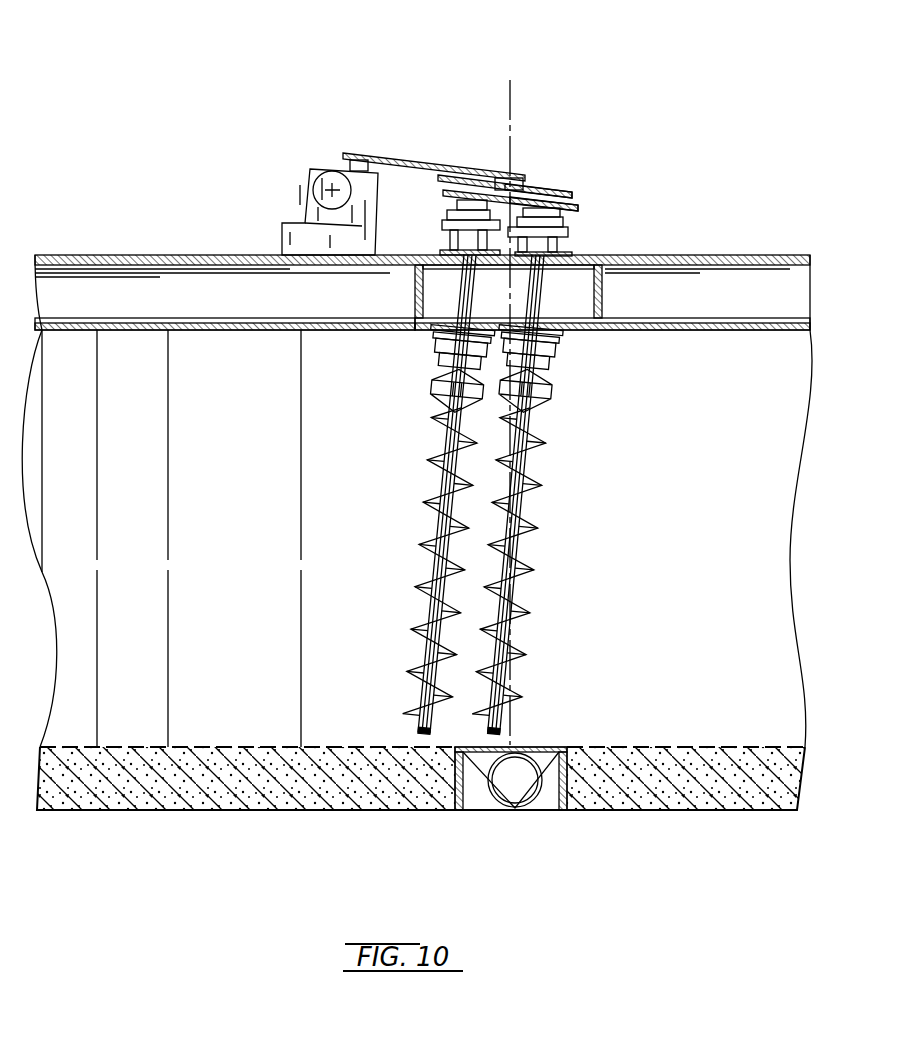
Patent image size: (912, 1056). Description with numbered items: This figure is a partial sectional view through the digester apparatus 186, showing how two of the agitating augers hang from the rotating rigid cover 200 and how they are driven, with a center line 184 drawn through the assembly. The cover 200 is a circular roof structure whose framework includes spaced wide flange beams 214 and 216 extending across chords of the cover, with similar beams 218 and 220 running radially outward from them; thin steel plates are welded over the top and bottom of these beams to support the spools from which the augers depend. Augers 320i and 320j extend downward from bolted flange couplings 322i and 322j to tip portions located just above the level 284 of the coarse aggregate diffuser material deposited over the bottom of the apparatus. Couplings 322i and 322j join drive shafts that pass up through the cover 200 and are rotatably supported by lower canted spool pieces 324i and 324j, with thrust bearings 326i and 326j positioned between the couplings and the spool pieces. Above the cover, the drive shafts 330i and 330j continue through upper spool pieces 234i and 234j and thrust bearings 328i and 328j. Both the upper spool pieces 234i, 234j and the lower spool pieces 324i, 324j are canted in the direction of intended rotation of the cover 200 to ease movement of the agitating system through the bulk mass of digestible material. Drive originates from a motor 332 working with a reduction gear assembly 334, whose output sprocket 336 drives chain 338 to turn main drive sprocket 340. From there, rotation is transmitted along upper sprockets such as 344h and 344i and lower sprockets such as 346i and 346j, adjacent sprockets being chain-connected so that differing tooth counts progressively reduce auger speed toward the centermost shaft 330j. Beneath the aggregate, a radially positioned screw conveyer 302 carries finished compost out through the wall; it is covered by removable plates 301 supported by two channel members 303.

The digester apparatus 186 is at (156, 70).
The center line 184 is at (512, 98).
The rigid cover 200 is at (160, 254).
The wide flange beam 214 is at (413, 293).
The wide flange beam 216 is at (604, 300).
The beam 218 is at (233, 305).
The beam 220 is at (693, 305).
The spool piece 234i is at (440, 252).
The spool piece 234j is at (572, 254).
The level of diffuser material 284 is at (243, 747).
The removable plates 301 is at (540, 748).
The screw conveyer 302 is at (502, 812).
The channel members 303 is at (466, 808).
The auger 320i is at (440, 522).
The auger 320j is at (532, 514).
The bolted flange coupling 322i is at (435, 386).
The bolted flange coupling 322j is at (560, 397).
The lower canted spool piece 324i is at (440, 343).
The lower canted spool piece 324j is at (548, 344).
The thrust bearing 326i is at (438, 361).
The thrust bearing 326j is at (554, 361).
The thrust bearing 328i is at (450, 240).
The thrust bearing 328j is at (558, 243).
The drive shaft 330i is at (450, 222).
The drive shaft 330j is at (568, 230).
The motor 332 is at (330, 191).
The reduction gear assembly 334 is at (312, 172).
The sprocket 336 is at (356, 154).
The chain 338 is at (430, 160).
The main drive sprocket 340 is at (497, 175).
The sprocket 344i is at (445, 180).
The sprocket 344h is at (566, 190).
The sprocket 346i is at (452, 195).
The sprocket 346j is at (578, 206).